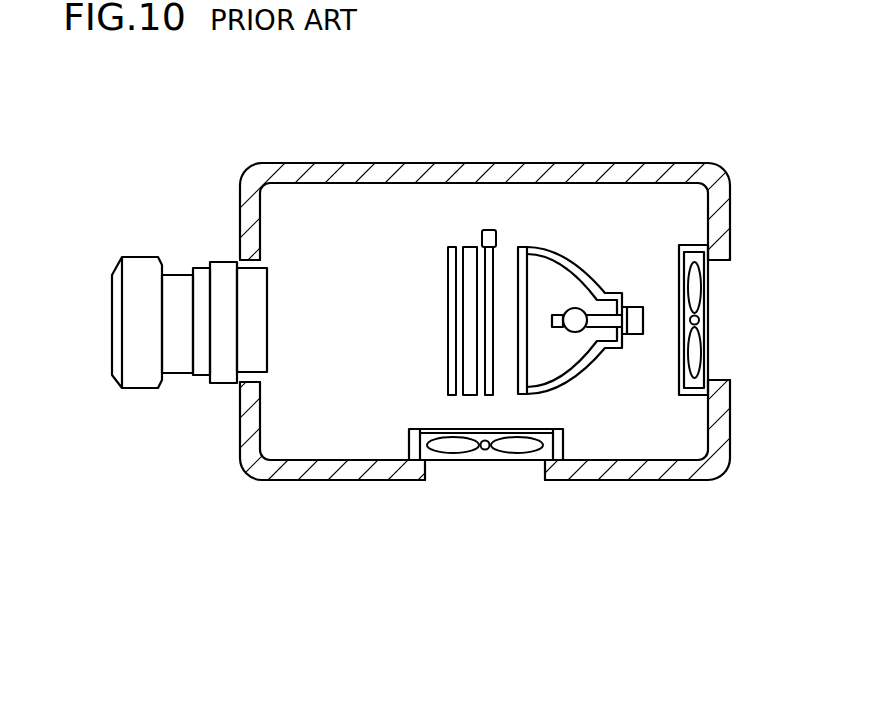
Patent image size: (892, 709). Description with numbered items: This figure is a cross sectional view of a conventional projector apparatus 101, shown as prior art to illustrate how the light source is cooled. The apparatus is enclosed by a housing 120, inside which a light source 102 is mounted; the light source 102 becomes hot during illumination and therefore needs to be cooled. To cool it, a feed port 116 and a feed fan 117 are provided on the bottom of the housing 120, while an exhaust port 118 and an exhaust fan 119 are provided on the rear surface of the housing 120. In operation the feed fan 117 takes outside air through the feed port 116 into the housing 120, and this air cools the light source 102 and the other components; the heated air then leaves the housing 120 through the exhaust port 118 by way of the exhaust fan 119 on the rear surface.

The projector (prior art) 101 is at (500, 160).
The light source 102 is at (552, 350).
The feed port 116 is at (425, 462).
The feed fan 117 is at (514, 447).
The exhaust port 118 is at (712, 380).
The exhaust fan 119 is at (695, 290).
The housing 120 is at (638, 170).